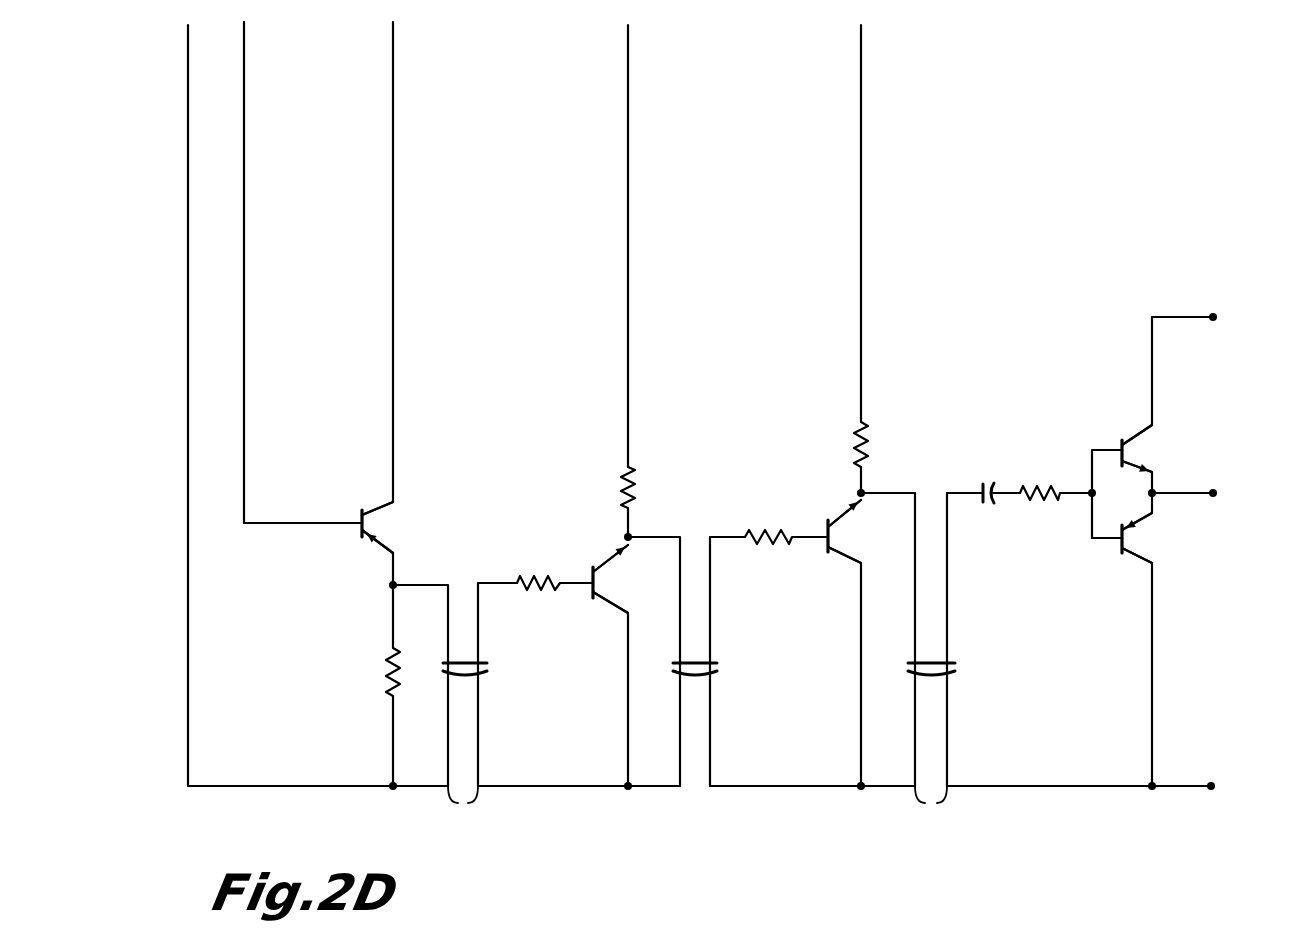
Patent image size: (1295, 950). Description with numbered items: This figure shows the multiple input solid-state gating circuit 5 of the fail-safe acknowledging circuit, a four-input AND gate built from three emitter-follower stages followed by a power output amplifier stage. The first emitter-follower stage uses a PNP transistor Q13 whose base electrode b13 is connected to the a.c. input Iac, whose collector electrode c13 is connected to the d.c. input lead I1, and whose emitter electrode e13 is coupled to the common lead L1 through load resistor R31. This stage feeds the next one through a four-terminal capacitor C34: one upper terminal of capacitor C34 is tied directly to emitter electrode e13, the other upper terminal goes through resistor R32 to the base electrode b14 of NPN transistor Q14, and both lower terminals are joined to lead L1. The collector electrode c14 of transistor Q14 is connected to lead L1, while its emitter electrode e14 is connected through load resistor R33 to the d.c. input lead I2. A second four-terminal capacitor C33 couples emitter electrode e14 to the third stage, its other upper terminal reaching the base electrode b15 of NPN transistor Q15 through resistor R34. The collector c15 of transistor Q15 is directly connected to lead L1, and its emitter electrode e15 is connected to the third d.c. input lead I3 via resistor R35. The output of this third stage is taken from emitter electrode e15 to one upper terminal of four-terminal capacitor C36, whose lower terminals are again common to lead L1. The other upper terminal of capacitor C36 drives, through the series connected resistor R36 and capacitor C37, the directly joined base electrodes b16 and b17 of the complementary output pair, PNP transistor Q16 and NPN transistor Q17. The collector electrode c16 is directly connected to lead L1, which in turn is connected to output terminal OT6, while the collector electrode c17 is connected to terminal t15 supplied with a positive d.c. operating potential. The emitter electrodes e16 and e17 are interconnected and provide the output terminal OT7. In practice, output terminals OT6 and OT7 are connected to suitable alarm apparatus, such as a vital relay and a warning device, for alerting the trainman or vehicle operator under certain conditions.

The multiple input solid-state gating circuit 5 is at (701, 820).
The a.c. input Iac is at (246, 283).
The d.c. input lead I1 is at (395, 283).
The d.c. input lead I2 is at (630, 283).
The d.c. input lead I3 is at (863, 283).
The PNP transistor Q13 is at (408, 538).
The base electrode b13 is at (360, 532).
The collector electrode c13 is at (390, 502).
The emitter electrode e13 is at (389, 557).
The load resistor R31 is at (390, 652).
The resistor R32 is at (544, 579).
The four-terminal capacitor C34 is at (487, 663).
The common lead L1 is at (697, 801).
The NPN transistor Q14 is at (637, 595).
The base electrode b14 is at (592, 590).
The collector electrode c14 is at (619, 615).
The emitter electrode e14 is at (615, 556).
The load resistor R33 is at (633, 478).
The four-terminal capacitor C33 is at (716, 664).
The resistor R34 is at (782, 533).
The NPN transistor Q15 is at (870, 551).
The base electrode b15 is at (825, 543).
The collector electrode c15 is at (857, 566).
The emitter electrode e15 is at (852, 512).
The resistor R35 is at (868, 429).
The four-terminal capacitor C36 is at (951, 664).
The capacitor C37 is at (984, 485).
The resistor R36 is at (1055, 498).
The NPN transistor Q17 is at (1170, 461).
The base electrode b17 is at (1120, 443).
The collector electrode c17 is at (1146, 424).
The emitter electrode e17 is at (1153, 469).
The PNP transistor Q16 is at (1169, 549).
The base electrode b16 is at (1119, 547).
The collector electrode c16 is at (1148, 566).
The emitter electrode e16 is at (1155, 516).
The terminal t15 is at (1212, 314).
The output terminal OT7 is at (1214, 496).
The output terminal OT6 is at (1211, 783).